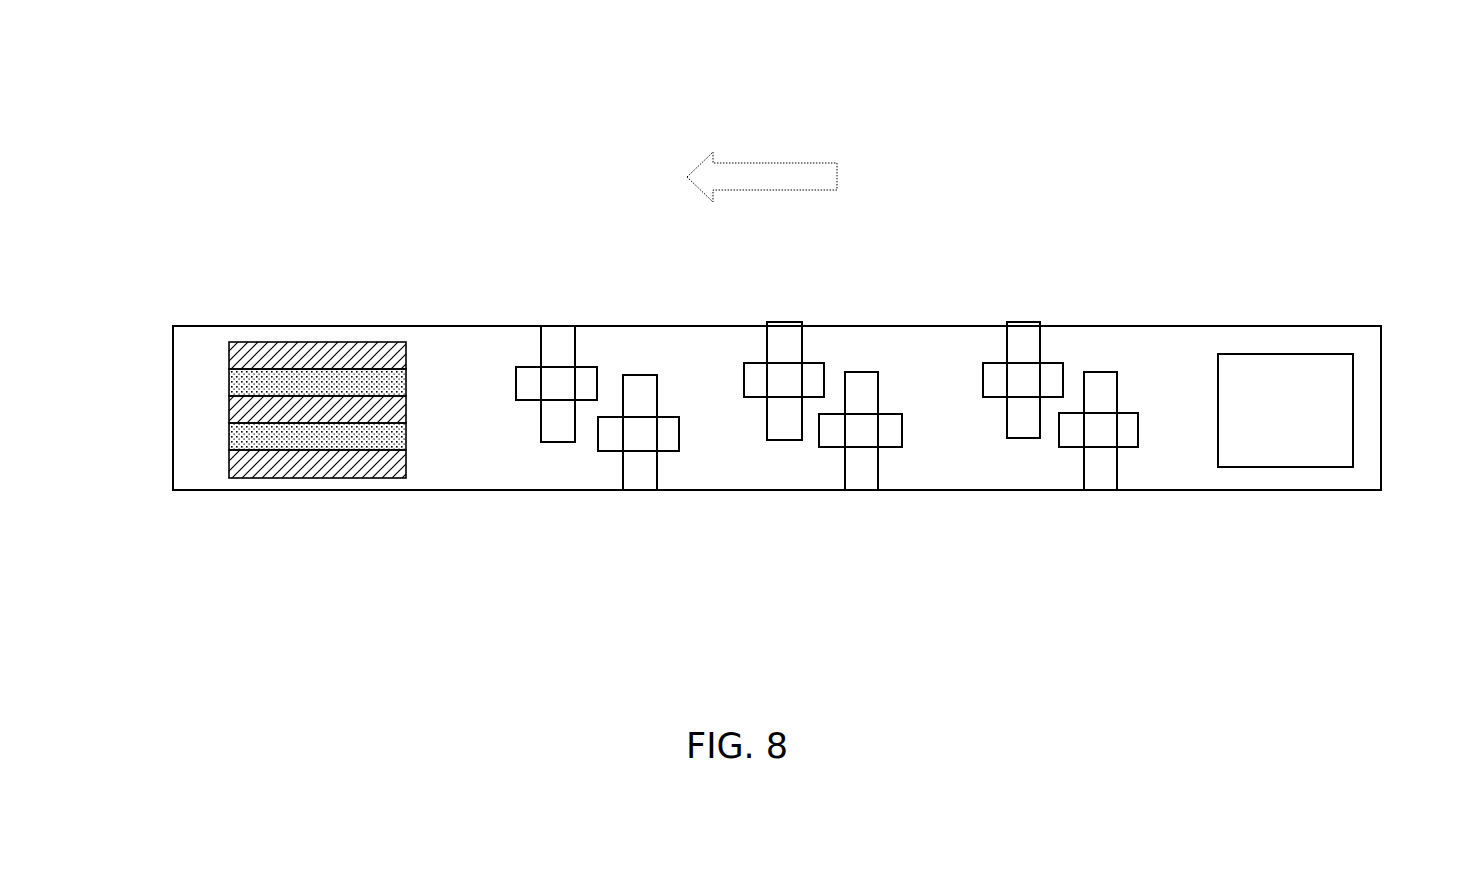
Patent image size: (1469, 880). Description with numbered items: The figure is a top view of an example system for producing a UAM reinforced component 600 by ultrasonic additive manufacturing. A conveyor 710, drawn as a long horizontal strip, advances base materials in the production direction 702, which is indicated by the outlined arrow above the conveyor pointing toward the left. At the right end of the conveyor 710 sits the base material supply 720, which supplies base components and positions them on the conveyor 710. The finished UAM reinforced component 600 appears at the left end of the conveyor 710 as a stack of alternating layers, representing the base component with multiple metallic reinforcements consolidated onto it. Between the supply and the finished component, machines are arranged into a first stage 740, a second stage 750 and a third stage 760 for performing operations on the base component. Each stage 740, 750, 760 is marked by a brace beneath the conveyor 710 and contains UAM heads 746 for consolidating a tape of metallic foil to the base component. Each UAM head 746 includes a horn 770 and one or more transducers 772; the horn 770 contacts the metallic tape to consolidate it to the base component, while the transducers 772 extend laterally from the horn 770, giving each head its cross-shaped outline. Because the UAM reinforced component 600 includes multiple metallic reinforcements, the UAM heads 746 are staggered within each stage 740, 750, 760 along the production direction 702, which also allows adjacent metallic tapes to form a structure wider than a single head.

The UAM reinforced component 600 is at (345, 342).
The production direction 702 is at (782, 167).
The conveyor 710 is at (240, 328).
The base material supply 720 is at (1312, 353).
The first stage 740 is at (1153, 512).
The UAM head 746 is at (1023, 313).
The stage 750 is at (910, 517).
The stage 760 is at (664, 517).
The horn 770 is at (1005, 378).
The transducer 772 is at (1033, 330).